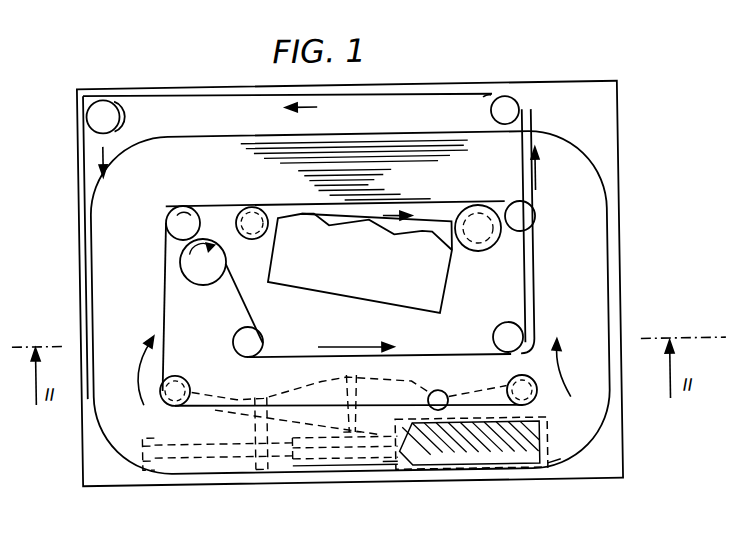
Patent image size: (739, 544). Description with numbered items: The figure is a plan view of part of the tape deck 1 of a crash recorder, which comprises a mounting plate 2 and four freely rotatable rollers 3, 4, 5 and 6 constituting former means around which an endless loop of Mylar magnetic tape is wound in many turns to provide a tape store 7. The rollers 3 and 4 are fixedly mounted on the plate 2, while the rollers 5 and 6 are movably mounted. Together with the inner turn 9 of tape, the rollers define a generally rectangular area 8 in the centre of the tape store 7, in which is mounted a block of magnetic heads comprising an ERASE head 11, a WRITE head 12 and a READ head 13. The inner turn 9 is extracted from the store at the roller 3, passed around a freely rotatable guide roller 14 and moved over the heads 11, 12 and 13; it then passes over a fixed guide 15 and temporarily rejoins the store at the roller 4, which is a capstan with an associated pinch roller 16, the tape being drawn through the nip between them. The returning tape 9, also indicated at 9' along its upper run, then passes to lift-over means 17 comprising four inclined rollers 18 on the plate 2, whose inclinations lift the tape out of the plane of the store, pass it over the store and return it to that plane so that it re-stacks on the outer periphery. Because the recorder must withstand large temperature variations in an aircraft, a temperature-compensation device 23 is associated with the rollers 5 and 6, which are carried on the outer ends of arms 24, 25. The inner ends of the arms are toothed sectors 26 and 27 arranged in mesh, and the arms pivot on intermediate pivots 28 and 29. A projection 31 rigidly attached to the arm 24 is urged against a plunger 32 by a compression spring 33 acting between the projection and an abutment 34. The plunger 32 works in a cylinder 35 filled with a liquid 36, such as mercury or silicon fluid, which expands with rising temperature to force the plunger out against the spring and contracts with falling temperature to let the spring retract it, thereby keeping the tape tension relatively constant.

The tape deck 1 is at (451, 71).
The mounting plate 2 is at (588, 88).
The roller 3 is at (537, 212).
The capstan 4 is at (178, 205).
The roller 5 is at (163, 402).
The roller 6 is at (535, 400).
The tape store 7 is at (347, 156).
The rectangular area 8 is at (170, 296).
The inner turn of tape 9 is at (334, 255).
The upper belt run 9' is at (442, 114).
The ERASE head 11 is at (424, 289).
The WRITE head 12 is at (368, 276).
The READ head 13 is at (311, 271).
The guide roller 14 is at (491, 252).
The fixed guide 15 is at (250, 208).
The pinch roller 16 is at (165, 266).
The lift-over means 17 is at (277, 324).
The inclined rollers 18 is at (100, 114).
The temperature-compensation device 23 is at (357, 472).
The arm 24 is at (207, 387).
The arm 25 is at (506, 386).
The toothed sector 26 is at (312, 383).
The toothed sector 27 is at (388, 472).
The pivot 28 is at (242, 407).
The pivot 29 is at (436, 391).
The projection 31 is at (265, 470).
The plunger 32 is at (310, 474).
The compression spring 33 is at (193, 452).
The abutment 34 is at (140, 438).
The cylinder 35 is at (560, 472).
The liquid 36 is at (462, 470).